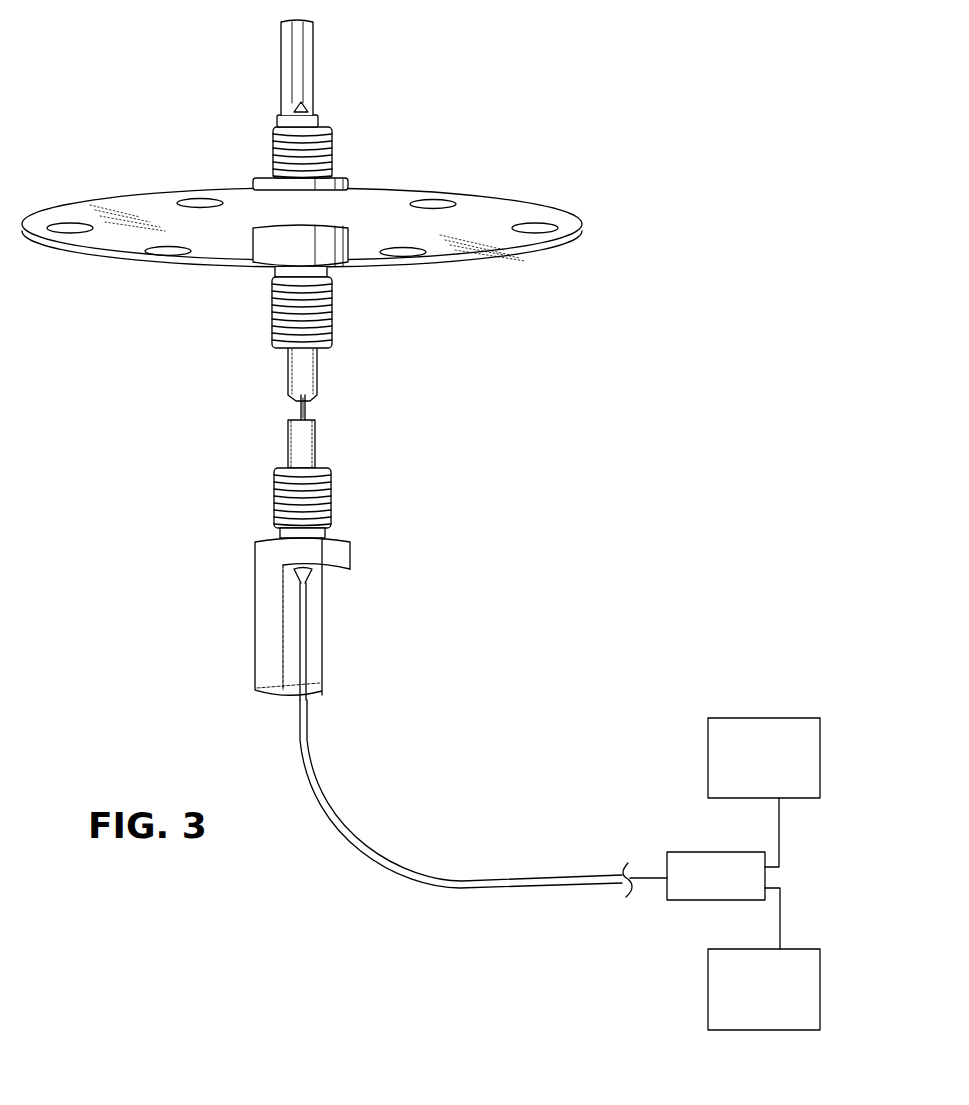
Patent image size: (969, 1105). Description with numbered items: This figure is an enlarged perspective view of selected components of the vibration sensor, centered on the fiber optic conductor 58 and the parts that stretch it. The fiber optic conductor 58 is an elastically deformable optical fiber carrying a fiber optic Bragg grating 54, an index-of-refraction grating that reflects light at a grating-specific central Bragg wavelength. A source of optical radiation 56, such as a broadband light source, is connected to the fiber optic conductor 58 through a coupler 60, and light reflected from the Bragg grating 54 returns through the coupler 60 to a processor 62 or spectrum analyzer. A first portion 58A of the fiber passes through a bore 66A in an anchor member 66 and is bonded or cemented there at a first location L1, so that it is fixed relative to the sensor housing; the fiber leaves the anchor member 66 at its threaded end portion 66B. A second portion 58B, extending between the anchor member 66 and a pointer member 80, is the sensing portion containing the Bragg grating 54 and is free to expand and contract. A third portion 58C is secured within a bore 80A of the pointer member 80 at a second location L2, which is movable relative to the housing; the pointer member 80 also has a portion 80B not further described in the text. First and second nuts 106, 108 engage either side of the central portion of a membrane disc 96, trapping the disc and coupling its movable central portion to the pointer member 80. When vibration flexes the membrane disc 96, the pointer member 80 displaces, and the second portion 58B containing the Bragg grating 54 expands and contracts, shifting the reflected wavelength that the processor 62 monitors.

The fiber optic Bragg grating 54 is at (302, 411).
The source of optical radiation 56 is at (752, 718).
The fiber optic conductor 58 is at (545, 878).
The first portion of the fiber optic conductor 58A is at (305, 594).
The second portion of the fiber optic conductor 58B is at (306, 410).
The third portion of the fiber optic conductor 58C is at (300, 106).
The coupler 60 is at (678, 900).
The processor 62 is at (766, 1031).
The anchor member 66 is at (261, 616).
The bore 66A is at (302, 688).
The threaded end portion of the anchor member 66B is at (312, 443).
The pointer member 80 is at (272, 275).
The bore 80A is at (302, 40).
The feedthrough threaded portion 80B is at (333, 311).
The membrane disc 96 is at (543, 238).
The first nut 106 is at (340, 250).
The second nut 108 is at (253, 184).
The first location L1 is at (325, 590).
The second location L2 is at (310, 102).